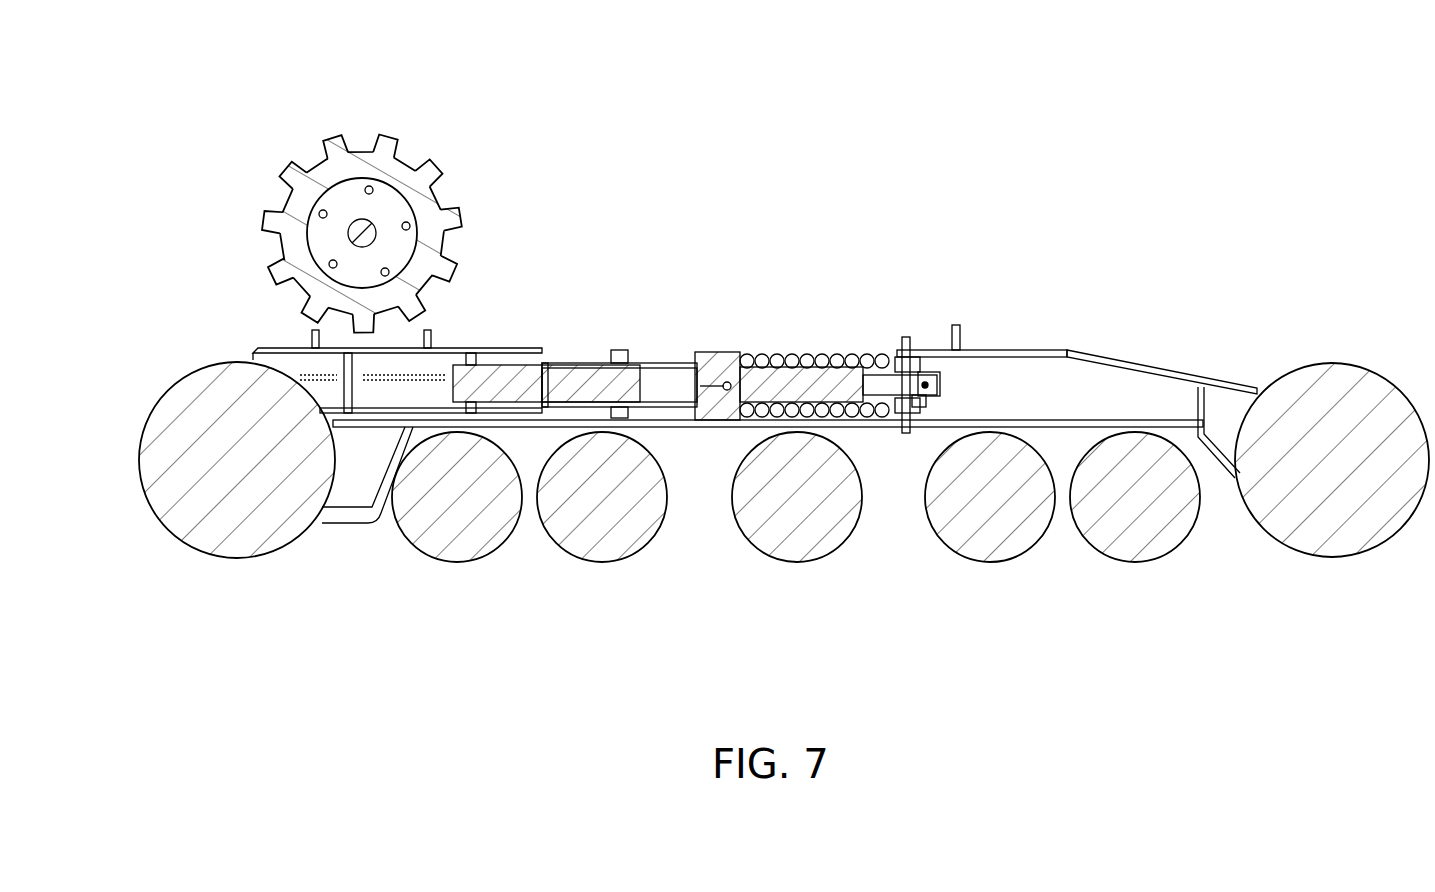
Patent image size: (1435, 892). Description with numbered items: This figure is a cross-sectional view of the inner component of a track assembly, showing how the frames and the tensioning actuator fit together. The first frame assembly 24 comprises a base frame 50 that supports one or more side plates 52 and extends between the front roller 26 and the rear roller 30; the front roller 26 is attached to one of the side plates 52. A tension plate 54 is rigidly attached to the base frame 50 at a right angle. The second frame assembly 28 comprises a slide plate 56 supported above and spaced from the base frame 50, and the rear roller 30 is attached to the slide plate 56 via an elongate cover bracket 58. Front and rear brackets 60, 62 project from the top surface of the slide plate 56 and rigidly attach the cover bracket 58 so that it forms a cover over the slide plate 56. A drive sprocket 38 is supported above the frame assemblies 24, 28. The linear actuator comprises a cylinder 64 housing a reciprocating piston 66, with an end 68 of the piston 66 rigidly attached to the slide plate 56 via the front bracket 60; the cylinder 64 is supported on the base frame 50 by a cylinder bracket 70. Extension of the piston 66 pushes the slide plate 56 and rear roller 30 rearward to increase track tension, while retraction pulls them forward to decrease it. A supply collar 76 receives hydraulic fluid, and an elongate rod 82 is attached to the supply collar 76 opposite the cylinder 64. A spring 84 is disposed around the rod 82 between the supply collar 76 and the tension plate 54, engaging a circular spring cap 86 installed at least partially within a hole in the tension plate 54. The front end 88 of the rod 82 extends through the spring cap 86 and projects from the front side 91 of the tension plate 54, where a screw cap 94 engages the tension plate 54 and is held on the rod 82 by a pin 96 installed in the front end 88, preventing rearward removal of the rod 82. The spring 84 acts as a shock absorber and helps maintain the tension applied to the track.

The first frame assembly 24 is at (1020, 325).
The front roller 26 is at (1332, 439).
The second frame assembly 28 is at (475, 333).
The rear roller 30 is at (220, 469).
The drive sprocket 38 is at (362, 211).
The base frame 50 is at (687, 508).
The side plate 52 is at (1077, 346).
The tension plate 54 is at (943, 323).
The slide plate 56 is at (349, 512).
The cover bracket 58 is at (397, 285).
The front bracket 60 is at (546, 355).
The rear bracket 62 is at (267, 364).
The cylinder 64 is at (619, 482).
The piston 66 is at (506, 484).
The end of the piston 68 is at (312, 326).
The cylinder bracket 70 is at (653, 344).
The supply collar 76 is at (742, 338).
The elongate rod 82 is at (801, 489).
The spring 84 is at (814, 344).
The spring cap 86 is at (945, 312).
The front end of the rod 88 is at (875, 505).
The front side of the tension plate 91 is at (957, 505).
The screw cap 94 is at (1004, 497).
The pin 96 is at (964, 339).